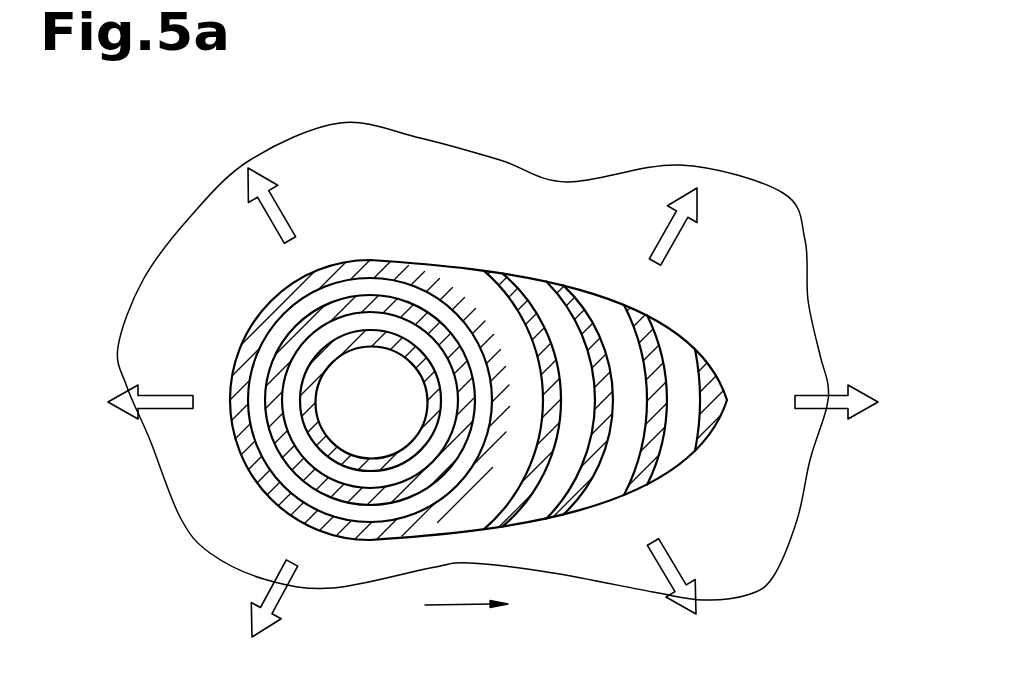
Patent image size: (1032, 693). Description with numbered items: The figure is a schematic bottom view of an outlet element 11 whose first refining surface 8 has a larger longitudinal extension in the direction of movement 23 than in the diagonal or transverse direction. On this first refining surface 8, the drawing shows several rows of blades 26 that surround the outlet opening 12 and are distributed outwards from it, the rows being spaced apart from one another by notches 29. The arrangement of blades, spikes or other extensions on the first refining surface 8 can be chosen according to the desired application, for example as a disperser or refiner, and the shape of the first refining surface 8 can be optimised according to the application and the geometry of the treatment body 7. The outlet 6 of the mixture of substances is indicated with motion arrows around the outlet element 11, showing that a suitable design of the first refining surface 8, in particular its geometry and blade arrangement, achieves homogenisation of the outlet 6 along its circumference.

The outlet of the mixture of substances 6 is at (857, 387).
The treatment body 7 is at (538, 202).
The first refining surface 8 is at (702, 300).
The outlet element 11 is at (337, 345).
The outlet opening 12 is at (380, 387).
The direction of movement 23 is at (452, 608).
The rows of blades 26 is at (402, 290).
The notches 29 is at (263, 358).